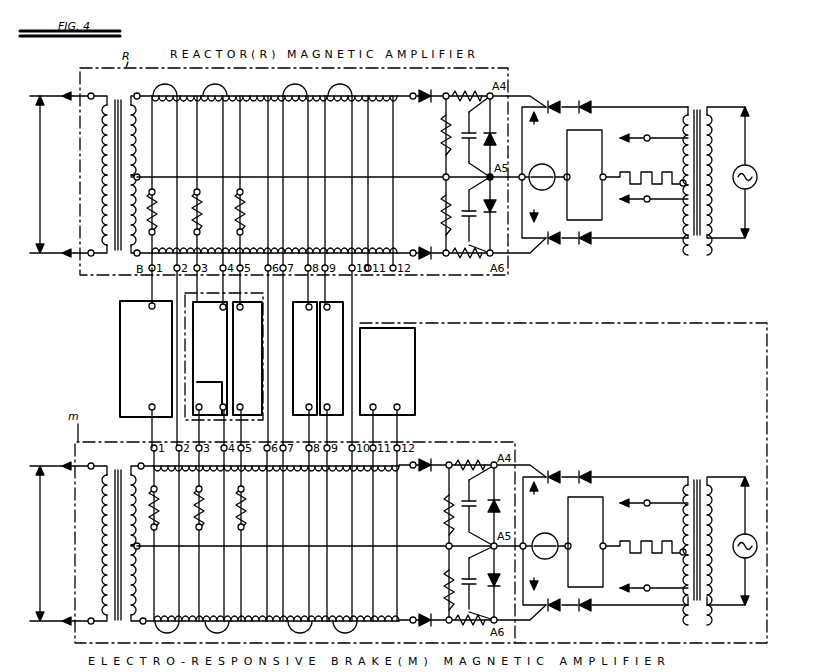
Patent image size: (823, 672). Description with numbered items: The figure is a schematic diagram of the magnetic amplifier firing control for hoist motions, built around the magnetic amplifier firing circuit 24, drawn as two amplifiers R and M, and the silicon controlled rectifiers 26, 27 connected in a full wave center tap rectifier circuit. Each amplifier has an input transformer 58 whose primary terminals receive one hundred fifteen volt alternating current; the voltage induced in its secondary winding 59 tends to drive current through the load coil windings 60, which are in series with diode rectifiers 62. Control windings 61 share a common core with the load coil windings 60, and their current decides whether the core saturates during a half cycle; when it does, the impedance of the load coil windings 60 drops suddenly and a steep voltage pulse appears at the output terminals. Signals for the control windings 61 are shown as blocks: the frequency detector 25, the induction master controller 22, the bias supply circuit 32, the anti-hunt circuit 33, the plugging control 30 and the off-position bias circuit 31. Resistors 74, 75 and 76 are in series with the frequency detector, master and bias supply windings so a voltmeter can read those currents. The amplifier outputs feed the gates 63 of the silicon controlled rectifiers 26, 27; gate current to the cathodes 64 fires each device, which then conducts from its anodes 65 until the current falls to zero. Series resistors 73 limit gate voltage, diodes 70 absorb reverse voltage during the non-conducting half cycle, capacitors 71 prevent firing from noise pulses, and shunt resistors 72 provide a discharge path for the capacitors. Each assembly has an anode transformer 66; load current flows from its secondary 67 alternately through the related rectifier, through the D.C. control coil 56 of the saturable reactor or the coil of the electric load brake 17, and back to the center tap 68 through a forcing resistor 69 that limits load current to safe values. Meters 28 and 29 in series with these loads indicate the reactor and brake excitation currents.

The electric load brake 17 is at (592, 500).
The induction master controller 22 is at (250, 302).
The magnetic amplifier firing circuit 24 is at (505, 63).
The frequency detector (feedback) 25 is at (120, 359).
The silicon controlled rectifier 26 is at (574, 78).
The silicon controlled rectifier 27 is at (574, 448).
The meter 28 is at (543, 164).
The meter 29 is at (548, 559).
The plugging control 30 is at (338, 302).
The off-position bias circuit 31 is at (415, 386).
The bias supply circuit 32 is at (208, 302).
The anti-hunt circuit 33 is at (299, 302).
The D.C. control coil 56 is at (588, 132).
The input transformer 58 is at (100, 266).
The secondary winding 59 is at (135, 138).
The load coil windings 60 is at (208, 104).
The control windings 61 is at (261, 361).
The diode rectifiers 62 is at (424, 611).
The gates 63 is at (544, 96).
The cathodes 64 is at (534, 351).
The anodes 65 is at (574, 100).
The anode transformer 66 is at (700, 104).
The anode transformer secondary 67 is at (680, 124).
The center tap 68 is at (680, 188).
The forcing resistor 69 is at (626, 204).
The diodes 70 is at (498, 140).
The capacitors 71 is at (466, 146).
The shunt resistors 72 is at (443, 142).
The series resistors 73 is at (465, 92).
The resistor 74 is at (154, 363).
The resistor 75 is at (251, 363).
The resistor 76 is at (204, 363).